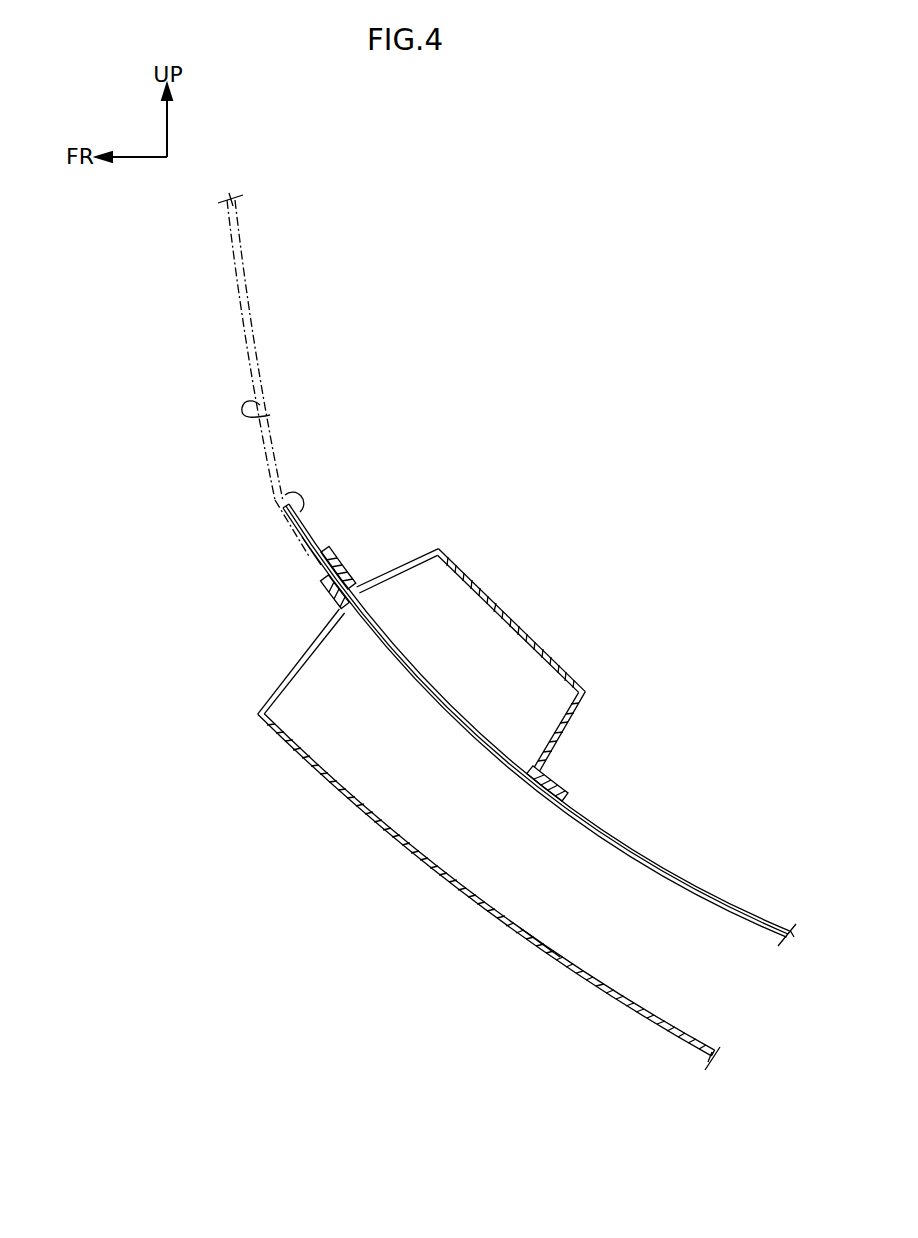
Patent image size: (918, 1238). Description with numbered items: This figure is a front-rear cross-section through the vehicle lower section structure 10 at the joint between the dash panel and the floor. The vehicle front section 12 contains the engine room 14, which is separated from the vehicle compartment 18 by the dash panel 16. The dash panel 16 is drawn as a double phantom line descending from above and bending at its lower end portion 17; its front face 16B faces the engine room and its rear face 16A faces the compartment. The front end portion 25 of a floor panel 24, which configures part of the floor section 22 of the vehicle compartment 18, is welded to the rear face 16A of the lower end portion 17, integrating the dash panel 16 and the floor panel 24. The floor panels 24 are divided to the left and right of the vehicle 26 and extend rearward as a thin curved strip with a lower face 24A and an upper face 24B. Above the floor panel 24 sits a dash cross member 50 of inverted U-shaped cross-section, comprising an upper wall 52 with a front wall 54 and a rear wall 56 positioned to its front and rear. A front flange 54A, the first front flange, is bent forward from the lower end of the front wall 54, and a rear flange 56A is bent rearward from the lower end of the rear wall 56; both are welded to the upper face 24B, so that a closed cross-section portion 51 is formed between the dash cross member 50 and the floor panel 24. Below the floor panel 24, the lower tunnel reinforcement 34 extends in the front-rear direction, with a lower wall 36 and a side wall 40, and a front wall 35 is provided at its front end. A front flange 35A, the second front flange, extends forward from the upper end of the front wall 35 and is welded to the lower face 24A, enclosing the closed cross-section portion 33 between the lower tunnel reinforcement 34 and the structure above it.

The vehicle lower section structure 10 is at (474, 781).
The vehicle front section 12 is at (543, 309).
The engine room 14 is at (110, 422).
The dash panel 16 is at (258, 352).
The rear face 16A is at (285, 495).
The front face 16B is at (270, 415).
The lower end portion 17 is at (288, 538).
The vehicle compartment 18 is at (534, 422).
The floor section 22 is at (539, 701).
The floor panel 24 is at (539, 701).
The lower face 24A is at (403, 666).
The upper face 24B is at (476, 728).
The front end portion 25 is at (320, 563).
The vehicle 26 is at (491, 324).
The closed cross-section portion 33 is at (536, 870).
The lower tunnel reinforcement 34 is at (489, 892).
The front wall 35 is at (296, 666).
The front flange 35A is at (323, 590).
The lower wall 36 is at (440, 887).
The side wall 40 is at (545, 915).
The dash cross member 50 is at (465, 781).
The closed cross-section portion 51 is at (498, 680).
The upper wall 52 is at (537, 645).
The front wall 54 is at (415, 556).
The front flange 54A is at (352, 570).
The rear wall 56 is at (574, 712).
The rear flange 56A is at (568, 788).